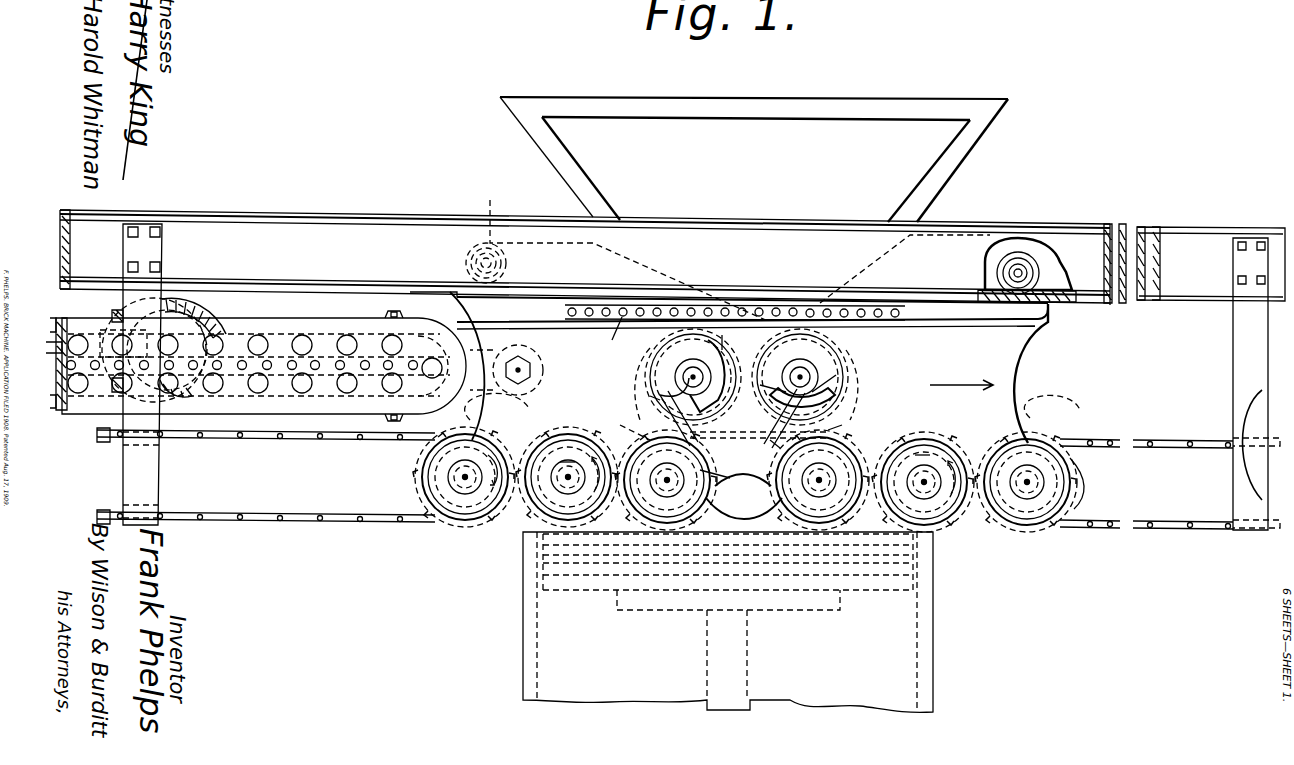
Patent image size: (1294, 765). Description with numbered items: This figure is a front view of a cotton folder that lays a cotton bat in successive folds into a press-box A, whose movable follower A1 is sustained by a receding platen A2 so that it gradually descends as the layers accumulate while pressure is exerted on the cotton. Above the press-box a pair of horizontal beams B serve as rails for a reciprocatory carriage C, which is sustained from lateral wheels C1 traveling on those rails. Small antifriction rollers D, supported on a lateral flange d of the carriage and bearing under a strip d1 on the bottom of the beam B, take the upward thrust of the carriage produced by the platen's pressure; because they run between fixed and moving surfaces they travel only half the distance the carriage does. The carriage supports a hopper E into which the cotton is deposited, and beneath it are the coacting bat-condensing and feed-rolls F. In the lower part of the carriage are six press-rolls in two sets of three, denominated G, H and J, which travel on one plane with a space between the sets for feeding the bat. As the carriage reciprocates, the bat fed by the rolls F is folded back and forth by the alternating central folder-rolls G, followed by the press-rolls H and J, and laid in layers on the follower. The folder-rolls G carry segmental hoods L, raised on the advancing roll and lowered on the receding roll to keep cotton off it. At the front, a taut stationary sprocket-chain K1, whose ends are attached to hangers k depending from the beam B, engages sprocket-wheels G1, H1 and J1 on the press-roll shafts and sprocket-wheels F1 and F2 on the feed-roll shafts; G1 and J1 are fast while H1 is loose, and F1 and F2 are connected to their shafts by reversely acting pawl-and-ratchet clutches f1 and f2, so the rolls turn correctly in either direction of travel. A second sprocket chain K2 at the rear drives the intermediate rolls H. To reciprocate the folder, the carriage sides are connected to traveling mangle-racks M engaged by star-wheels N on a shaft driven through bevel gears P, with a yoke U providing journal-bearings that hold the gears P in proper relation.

The press-box A is at (728, 622).
The follower A1 is at (920, 596).
The receding platen A2 is at (842, 608).
The horizontal beams B is at (306, 236).
The reciprocatory carriage C is at (749, 367).
The lateral wheels C1 is at (1075, 203).
The antifriction rollers D is at (812, 306).
The lateral flange d is at (611, 341).
The strip d1 is at (660, 303).
The hopper E is at (754, 159).
The bat-condensing and feed-rolls F is at (648, 372).
The sprocket-wheel F1 is at (655, 397).
The sprocket-wheel F2 is at (840, 425).
The pawl and ratchet clutch f1 is at (722, 335).
The pawl and ratchet clutch f2 is at (762, 433).
The central press-rolls or folder-rolls G is at (656, 505).
The sprocket-wheel G1 is at (862, 448).
The press-rolls H is at (530, 500).
The sprocket-wheel H1 is at (563, 453).
The press-rolls J is at (418, 478).
The sprocket-wheel J1 is at (468, 462).
The chain bracket K is at (134, 452).
The hangers k is at (1245, 396).
The stationary sprocket-chain K1 is at (332, 518).
The second sprocket chain K2 is at (325, 435).
The segmental hoods L is at (725, 471).
The mangle-racks M is at (290, 336).
The star-wheels N is at (222, 298).
The bevel gears P is at (170, 298).
The yoke U is at (120, 305).